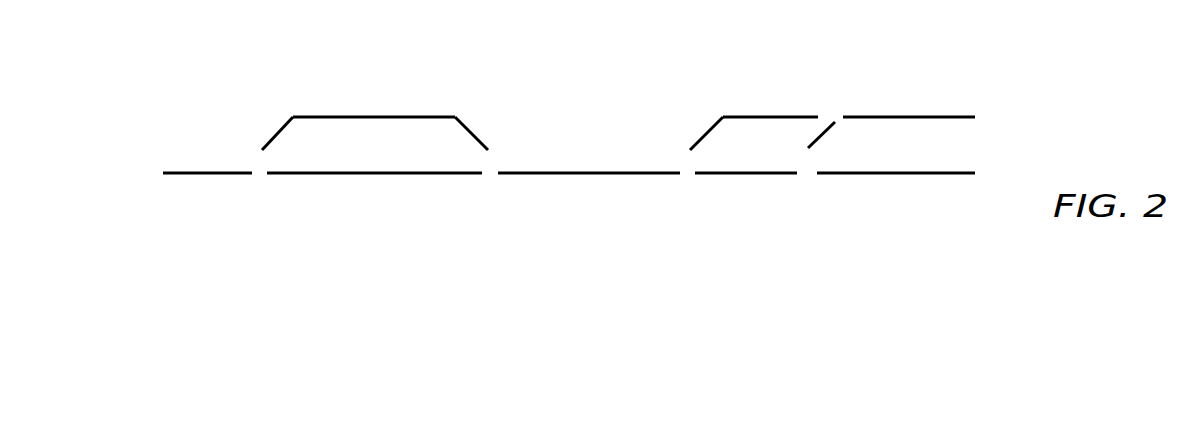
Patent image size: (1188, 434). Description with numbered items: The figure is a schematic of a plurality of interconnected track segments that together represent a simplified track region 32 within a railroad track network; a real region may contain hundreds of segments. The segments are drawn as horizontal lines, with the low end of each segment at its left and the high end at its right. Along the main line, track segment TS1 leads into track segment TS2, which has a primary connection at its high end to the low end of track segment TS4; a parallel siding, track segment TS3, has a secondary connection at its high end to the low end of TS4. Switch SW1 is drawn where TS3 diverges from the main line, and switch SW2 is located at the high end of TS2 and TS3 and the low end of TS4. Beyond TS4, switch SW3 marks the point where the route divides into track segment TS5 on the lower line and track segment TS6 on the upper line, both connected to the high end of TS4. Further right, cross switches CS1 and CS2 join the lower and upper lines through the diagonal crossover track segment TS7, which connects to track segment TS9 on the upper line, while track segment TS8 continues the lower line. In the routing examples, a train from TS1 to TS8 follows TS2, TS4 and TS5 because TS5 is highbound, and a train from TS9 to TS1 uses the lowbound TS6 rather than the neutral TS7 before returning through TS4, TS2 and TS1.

The track region 32 is at (258, 56).
The track segment TS1 is at (207, 190).
The track segment TS2 is at (374, 190).
The track segment TS3 is at (374, 134).
The track segment TS4 is at (589, 189).
The track segment TS5 is at (746, 189).
The track segment TS6 is at (770, 134).
The track segment TS7 is at (821, 142).
The track segment TS8 is at (896, 190).
The track segment TS9 is at (909, 134).
The switch SW1 is at (268, 170).
The switch SW2 is at (481, 170).
The switch SW3 is at (695, 170).
The cross switch CS1 is at (808, 211).
The cross switch CS2 is at (831, 98).